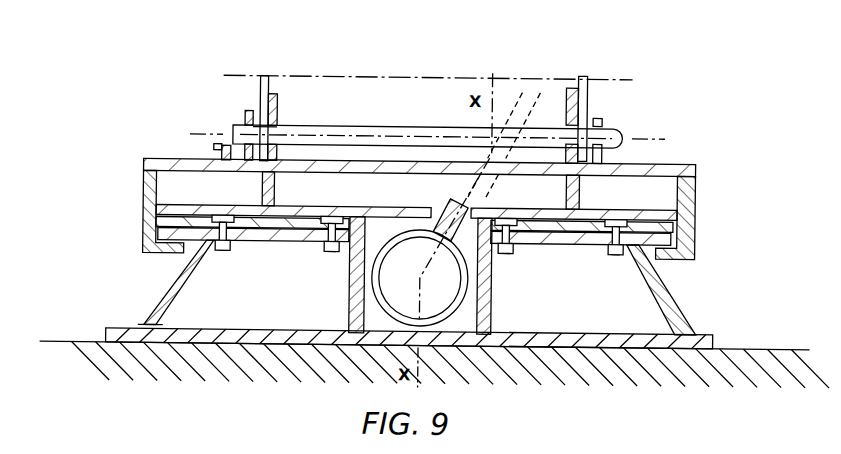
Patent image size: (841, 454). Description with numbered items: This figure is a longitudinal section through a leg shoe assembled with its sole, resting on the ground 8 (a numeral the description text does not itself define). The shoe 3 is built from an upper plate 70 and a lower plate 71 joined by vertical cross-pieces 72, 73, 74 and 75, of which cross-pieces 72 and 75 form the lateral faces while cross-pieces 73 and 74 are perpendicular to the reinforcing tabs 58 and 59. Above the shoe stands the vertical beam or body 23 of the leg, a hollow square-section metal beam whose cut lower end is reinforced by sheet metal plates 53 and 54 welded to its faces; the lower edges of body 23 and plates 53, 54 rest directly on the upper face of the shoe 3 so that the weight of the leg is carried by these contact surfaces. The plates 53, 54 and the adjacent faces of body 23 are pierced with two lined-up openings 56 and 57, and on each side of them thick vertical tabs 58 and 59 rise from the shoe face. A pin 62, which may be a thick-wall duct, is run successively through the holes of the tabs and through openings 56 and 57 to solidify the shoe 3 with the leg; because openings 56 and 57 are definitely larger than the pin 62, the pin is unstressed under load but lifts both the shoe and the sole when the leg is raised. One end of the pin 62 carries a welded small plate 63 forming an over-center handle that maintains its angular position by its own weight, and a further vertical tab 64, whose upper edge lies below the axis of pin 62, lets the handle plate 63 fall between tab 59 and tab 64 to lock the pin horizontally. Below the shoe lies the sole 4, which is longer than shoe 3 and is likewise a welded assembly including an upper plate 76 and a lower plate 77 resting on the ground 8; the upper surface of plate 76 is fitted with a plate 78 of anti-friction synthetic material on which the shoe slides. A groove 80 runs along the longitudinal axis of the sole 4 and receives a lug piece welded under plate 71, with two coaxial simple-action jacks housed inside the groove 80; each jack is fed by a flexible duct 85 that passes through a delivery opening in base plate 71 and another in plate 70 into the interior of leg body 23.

The shoe 3 is at (196, 123).
The sole 4 is at (155, 309).
The floor 8 is at (736, 343).
The vertical beam or body 23 is at (262, 98).
The sheet metal plate 53 is at (535, 106).
The sheet metal plate 54 is at (277, 111).
The opening 56 is at (536, 130).
The opening 57 is at (272, 126).
The vertical tab 58 is at (599, 145).
The vertical tab 59 is at (245, 117).
The pin 62 is at (363, 133).
The small plate 63 is at (215, 145).
The vertical tab 64 is at (236, 150).
The upper plate 70 is at (312, 167).
The lower plate 71 is at (323, 209).
The cross-piece 72 is at (161, 190).
The cross-piece 73 is at (274, 190).
The cross-piece 74 is at (581, 187).
The cross-piece 75 is at (678, 186).
The upper plate 76 is at (589, 242).
The lower plate 77 is at (559, 333).
The anti-friction plate 78 is at (275, 225).
The groove 80 is at (469, 288).
The flexible duct 85 is at (479, 179).